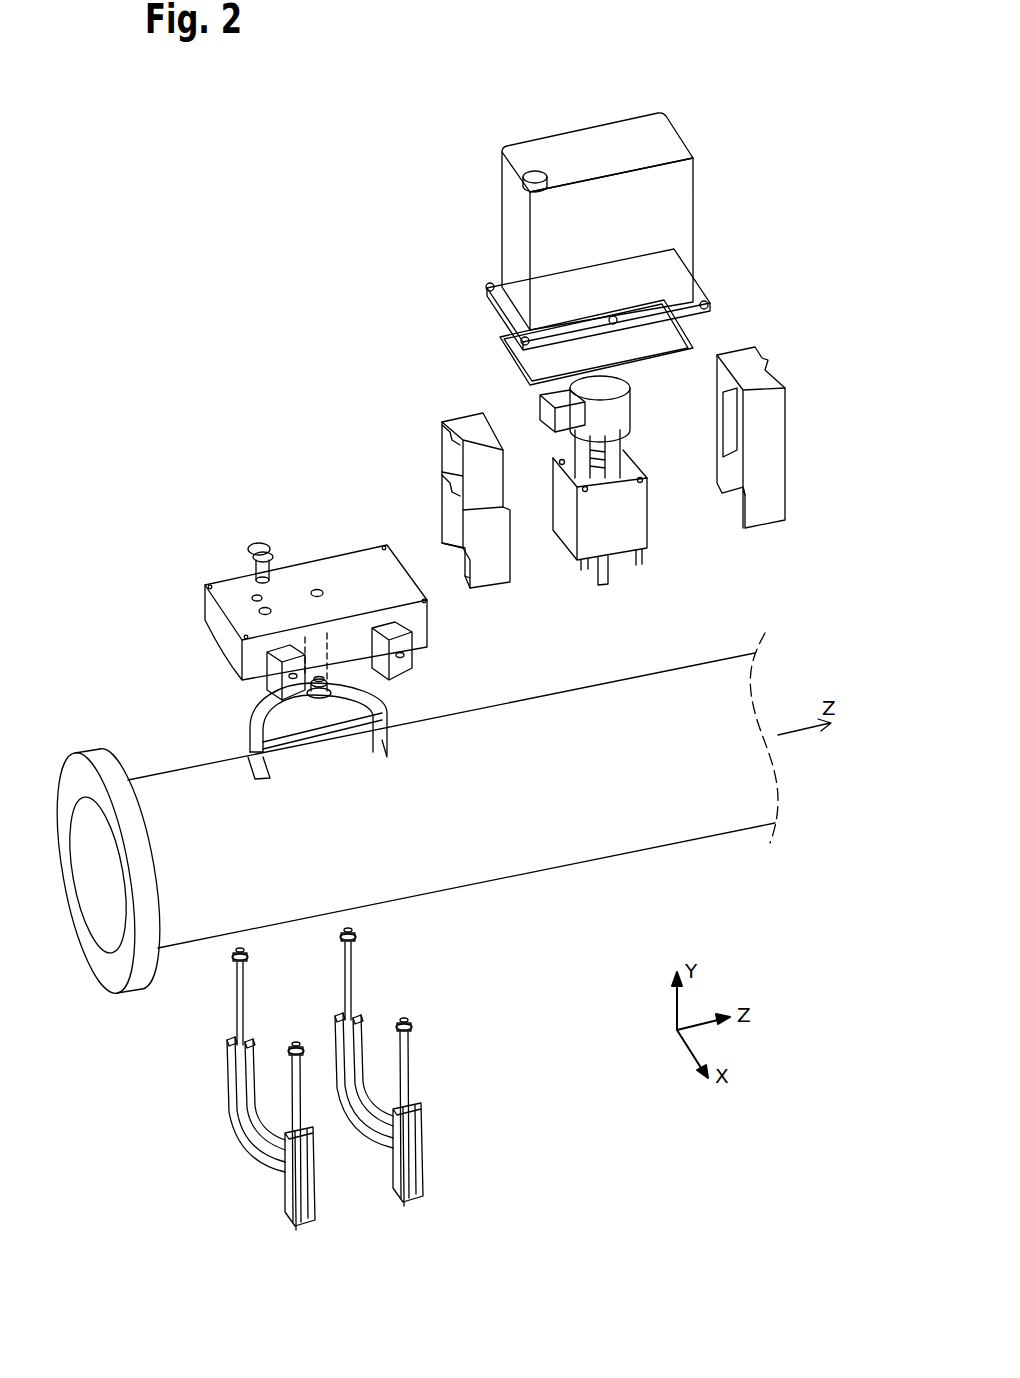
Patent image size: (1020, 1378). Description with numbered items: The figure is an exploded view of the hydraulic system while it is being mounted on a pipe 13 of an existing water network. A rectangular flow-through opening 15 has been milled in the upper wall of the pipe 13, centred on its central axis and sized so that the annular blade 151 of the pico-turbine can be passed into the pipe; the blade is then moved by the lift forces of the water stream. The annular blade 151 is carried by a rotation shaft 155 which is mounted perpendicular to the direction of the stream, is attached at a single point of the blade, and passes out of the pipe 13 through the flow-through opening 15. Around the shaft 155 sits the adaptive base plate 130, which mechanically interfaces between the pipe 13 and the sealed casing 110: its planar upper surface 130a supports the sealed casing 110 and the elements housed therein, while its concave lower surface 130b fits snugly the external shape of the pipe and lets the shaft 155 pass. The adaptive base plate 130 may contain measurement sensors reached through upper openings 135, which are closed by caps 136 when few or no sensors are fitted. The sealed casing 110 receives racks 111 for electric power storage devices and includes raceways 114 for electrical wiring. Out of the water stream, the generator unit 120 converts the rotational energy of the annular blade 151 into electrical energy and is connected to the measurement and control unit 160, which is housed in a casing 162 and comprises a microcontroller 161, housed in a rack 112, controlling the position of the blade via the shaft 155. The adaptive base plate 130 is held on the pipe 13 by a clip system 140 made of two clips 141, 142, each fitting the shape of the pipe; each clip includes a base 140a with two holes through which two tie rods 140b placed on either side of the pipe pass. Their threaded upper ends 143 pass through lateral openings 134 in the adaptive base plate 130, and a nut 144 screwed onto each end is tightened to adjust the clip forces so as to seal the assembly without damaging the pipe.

The pipe 13 is at (73, 778).
The flow-through opening 15 is at (400, 748).
The sealed casing 110 is at (500, 209).
The rack 111 is at (508, 355).
The rack 112 is at (723, 407).
The raceway 114 is at (533, 171).
The generator unit 120 is at (655, 386).
The adaptive base plate 130 is at (210, 622).
The upper surface 130a is at (375, 572).
The lower surface 130b is at (353, 692).
The lateral opening 134 is at (412, 658).
The upper opening 135 is at (255, 594).
The cap 136 is at (258, 545).
The clip system 140 is at (340, 1095).
The base 140a is at (273, 1190).
The tie rod 140b is at (387, 1172).
The clip 141 is at (215, 1139).
The clip 142 is at (430, 1137).
The upper end 143 is at (235, 953).
The nut 144 is at (247, 962).
The annular blade 151 is at (255, 730).
The rotation shaft 155 is at (315, 640).
The measurement and control unit 160 is at (775, 563).
The microcontroller 161 is at (737, 420).
The casing 162 is at (630, 520).